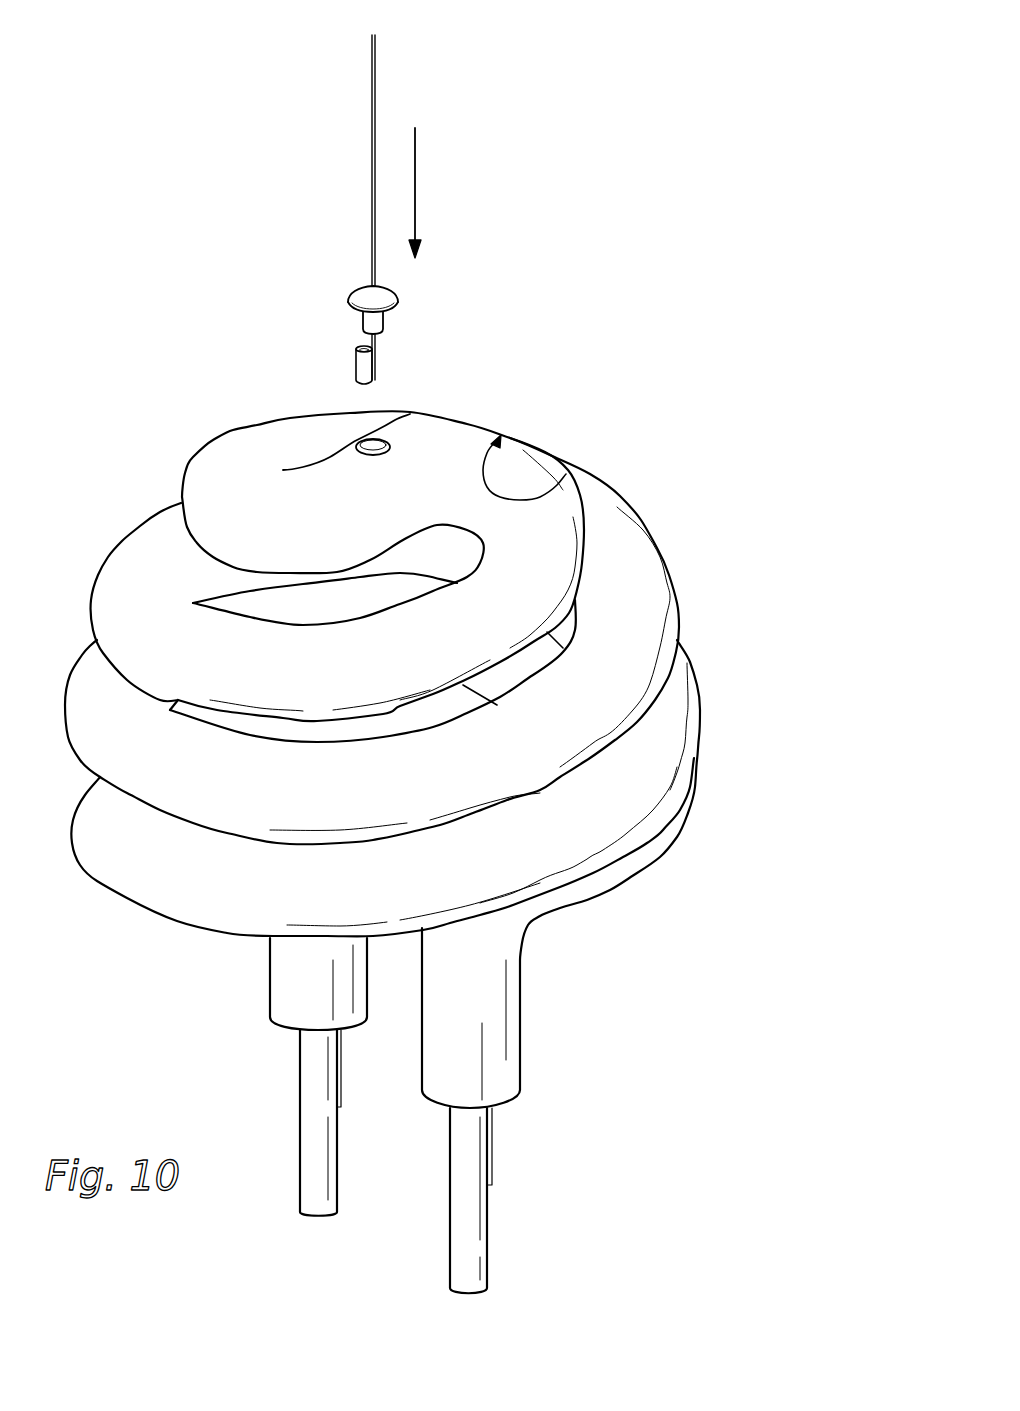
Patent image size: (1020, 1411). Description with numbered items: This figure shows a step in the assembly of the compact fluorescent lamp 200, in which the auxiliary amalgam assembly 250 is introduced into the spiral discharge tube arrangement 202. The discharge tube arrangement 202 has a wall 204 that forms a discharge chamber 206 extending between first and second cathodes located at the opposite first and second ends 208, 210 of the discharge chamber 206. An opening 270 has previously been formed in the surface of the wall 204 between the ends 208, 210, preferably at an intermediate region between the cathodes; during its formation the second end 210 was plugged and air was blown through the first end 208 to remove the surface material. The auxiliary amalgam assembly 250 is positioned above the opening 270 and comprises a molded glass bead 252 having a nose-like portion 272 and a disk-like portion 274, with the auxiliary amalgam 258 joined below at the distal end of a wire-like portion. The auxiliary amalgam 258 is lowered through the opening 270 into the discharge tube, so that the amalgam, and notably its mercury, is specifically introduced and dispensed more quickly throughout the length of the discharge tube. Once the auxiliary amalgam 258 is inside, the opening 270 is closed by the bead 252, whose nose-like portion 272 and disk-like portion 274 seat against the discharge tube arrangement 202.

The compact fluorescent lamp 200 is at (610, 100).
The spiral discharge tube arrangement 202 is at (657, 537).
The wall 204 is at (555, 488).
The discharge chamber 206 is at (593, 663).
The first end 208 is at (505, 1043).
The second end 210 is at (287, 993).
The auxiliary amalgam assembly 250 is at (242, 30).
The bead 252 is at (417, 287).
The auxiliary amalgam 258 is at (352, 366).
The opening 270 is at (385, 462).
The nose-like portion 272 is at (367, 291).
The disk-like portion 274 is at (363, 328).